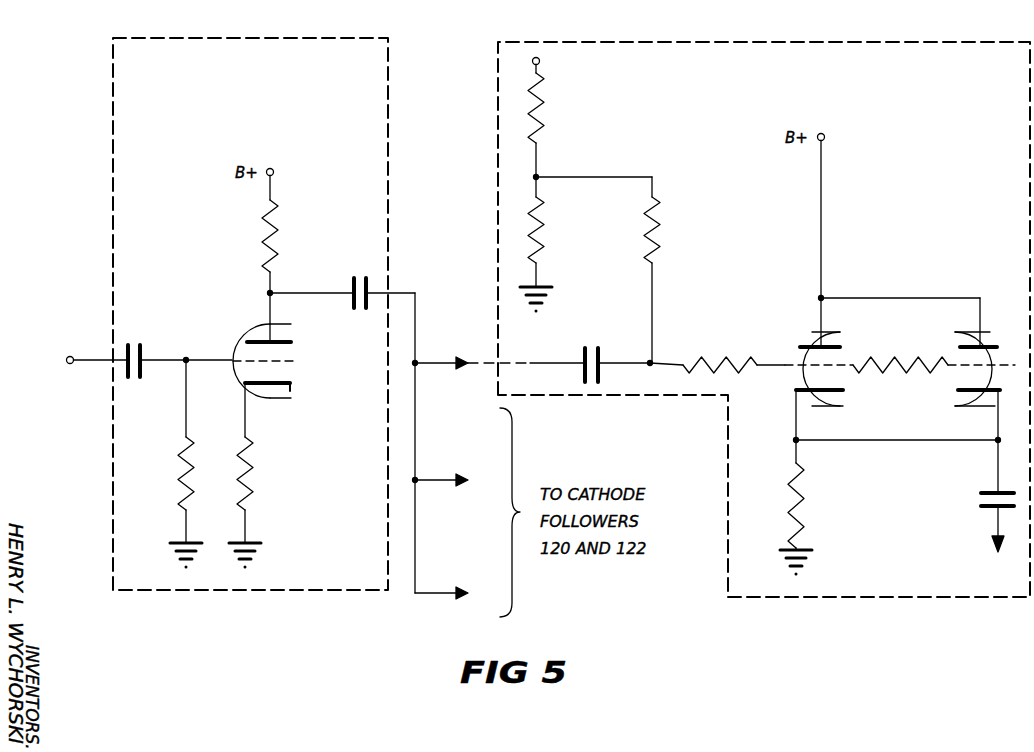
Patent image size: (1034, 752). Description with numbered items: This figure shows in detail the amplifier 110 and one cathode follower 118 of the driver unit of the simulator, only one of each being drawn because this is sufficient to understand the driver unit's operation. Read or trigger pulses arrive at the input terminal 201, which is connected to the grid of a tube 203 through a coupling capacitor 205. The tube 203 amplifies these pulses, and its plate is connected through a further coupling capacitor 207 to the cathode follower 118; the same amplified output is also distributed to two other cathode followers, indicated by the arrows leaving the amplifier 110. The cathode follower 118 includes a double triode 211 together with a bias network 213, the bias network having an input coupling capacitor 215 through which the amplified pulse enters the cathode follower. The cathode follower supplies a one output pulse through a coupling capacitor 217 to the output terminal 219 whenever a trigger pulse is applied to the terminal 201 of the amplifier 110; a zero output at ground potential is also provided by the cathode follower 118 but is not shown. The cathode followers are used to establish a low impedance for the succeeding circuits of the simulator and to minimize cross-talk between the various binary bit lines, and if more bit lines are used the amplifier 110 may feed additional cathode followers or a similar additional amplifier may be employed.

The amplifier 110 is at (272, 38).
The cathode follower 118 is at (700, 43).
The terminal 201 is at (69, 358).
The tube 203 is at (253, 327).
The coupling capacitor 205 is at (146, 356).
The coupling capacitor 207 is at (349, 286).
The double triode 211 is at (900, 385).
The bias network 213 is at (590, 208).
The input coupling capacitor 215 is at (604, 358).
The coupling capacitor 217 is at (981, 493).
The terminal 219 is at (987, 541).